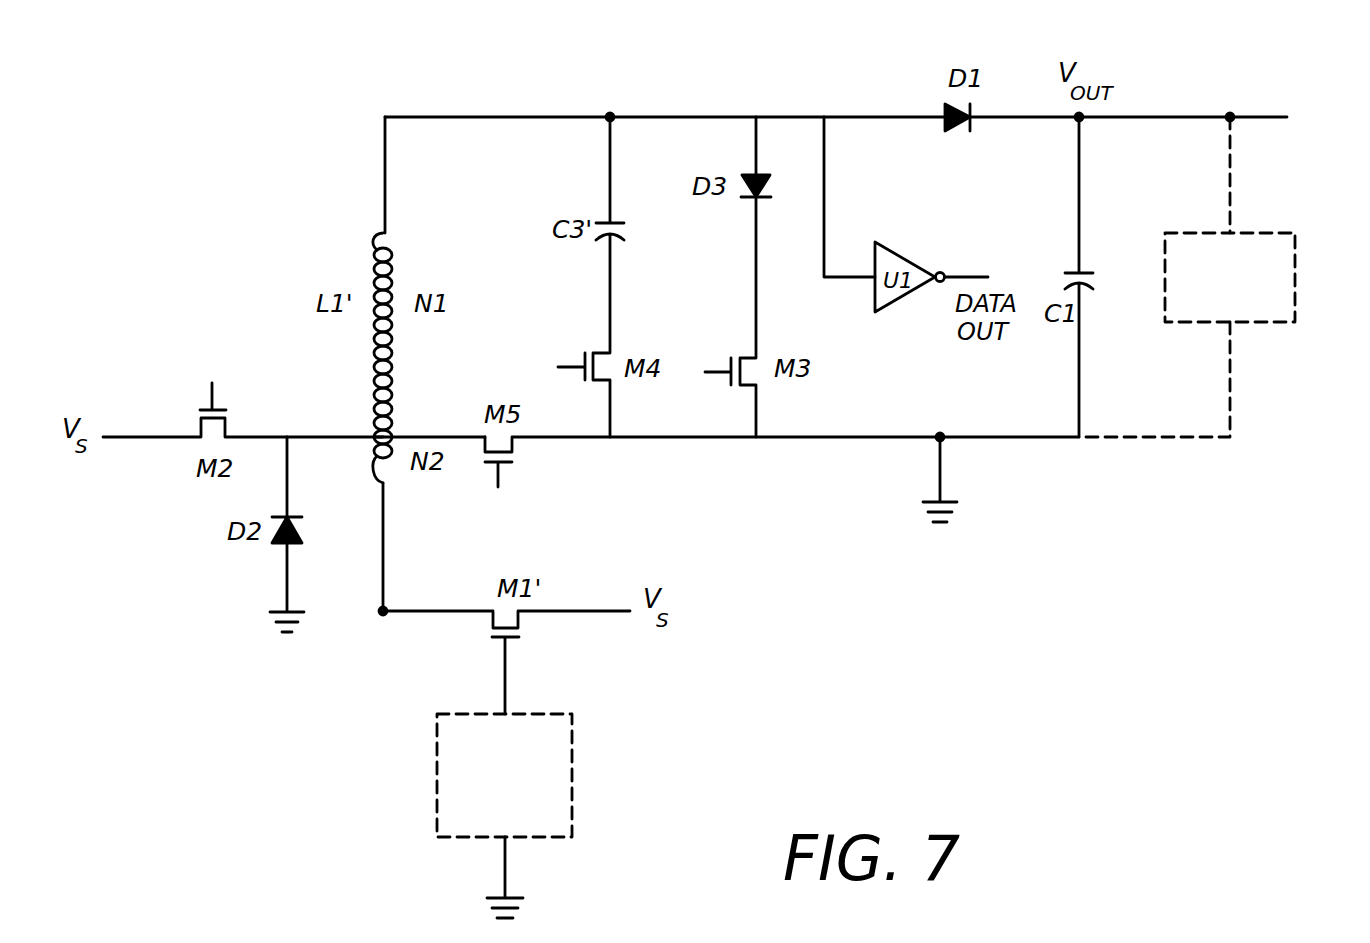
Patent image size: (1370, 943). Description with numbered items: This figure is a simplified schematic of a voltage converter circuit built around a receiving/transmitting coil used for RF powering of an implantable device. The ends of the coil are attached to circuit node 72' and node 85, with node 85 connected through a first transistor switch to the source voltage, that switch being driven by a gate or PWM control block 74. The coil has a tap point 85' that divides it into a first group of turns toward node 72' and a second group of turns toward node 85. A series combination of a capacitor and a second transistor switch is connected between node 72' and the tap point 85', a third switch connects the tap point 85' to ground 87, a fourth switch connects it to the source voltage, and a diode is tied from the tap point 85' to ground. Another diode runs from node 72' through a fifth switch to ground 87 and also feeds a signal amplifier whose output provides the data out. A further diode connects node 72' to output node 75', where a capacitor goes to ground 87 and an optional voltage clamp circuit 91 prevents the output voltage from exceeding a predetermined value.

The circuit node 72' is at (637, 80).
The tap point 85' is at (345, 395).
The node 85 is at (358, 588).
The ground 87 is at (940, 437).
The circuit node 75' is at (1050, 161).
The voltage clamp circuit 91 is at (1295, 280).
The gate or PWM control 74 is at (572, 768).